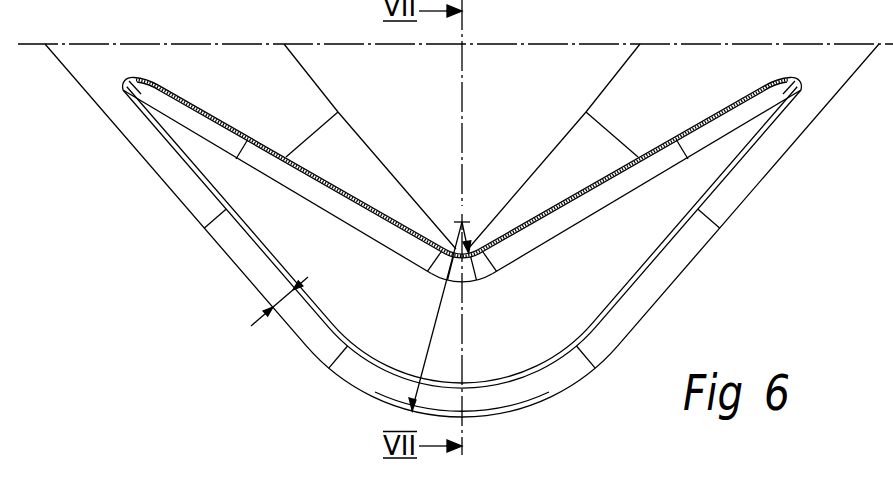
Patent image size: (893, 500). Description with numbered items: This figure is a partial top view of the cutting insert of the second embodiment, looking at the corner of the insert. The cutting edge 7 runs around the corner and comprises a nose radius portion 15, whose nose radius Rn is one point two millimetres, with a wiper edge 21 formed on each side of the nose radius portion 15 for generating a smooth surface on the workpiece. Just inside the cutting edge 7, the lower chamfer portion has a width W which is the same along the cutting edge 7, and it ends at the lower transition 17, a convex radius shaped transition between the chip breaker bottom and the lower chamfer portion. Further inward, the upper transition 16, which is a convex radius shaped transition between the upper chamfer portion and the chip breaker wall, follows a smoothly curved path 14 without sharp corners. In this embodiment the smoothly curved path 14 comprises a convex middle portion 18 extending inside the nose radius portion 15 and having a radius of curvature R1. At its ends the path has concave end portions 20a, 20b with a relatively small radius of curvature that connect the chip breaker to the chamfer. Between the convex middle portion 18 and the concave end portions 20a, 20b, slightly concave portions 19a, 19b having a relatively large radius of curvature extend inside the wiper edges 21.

The cutting edge 7 is at (370, 394).
The smoothly curved path 14 is at (702, 121).
The nose radius portion 15 is at (538, 402).
The upper transition 16 is at (606, 183).
The lower transition 17 is at (603, 318).
The convex middle portion 18 is at (477, 268).
The slightly concave portion 19a is at (363, 199).
The slightly concave portion 19b is at (568, 198).
The concave end portion 20a is at (128, 77).
The concave end portion 20b is at (796, 77).
The wiper edge 21 is at (285, 322).
The radius of curvature of convex middle portion R1 is at (471, 232).
The nose radius Rn is at (424, 365).
The width of lower chamfer portion W is at (285, 294).